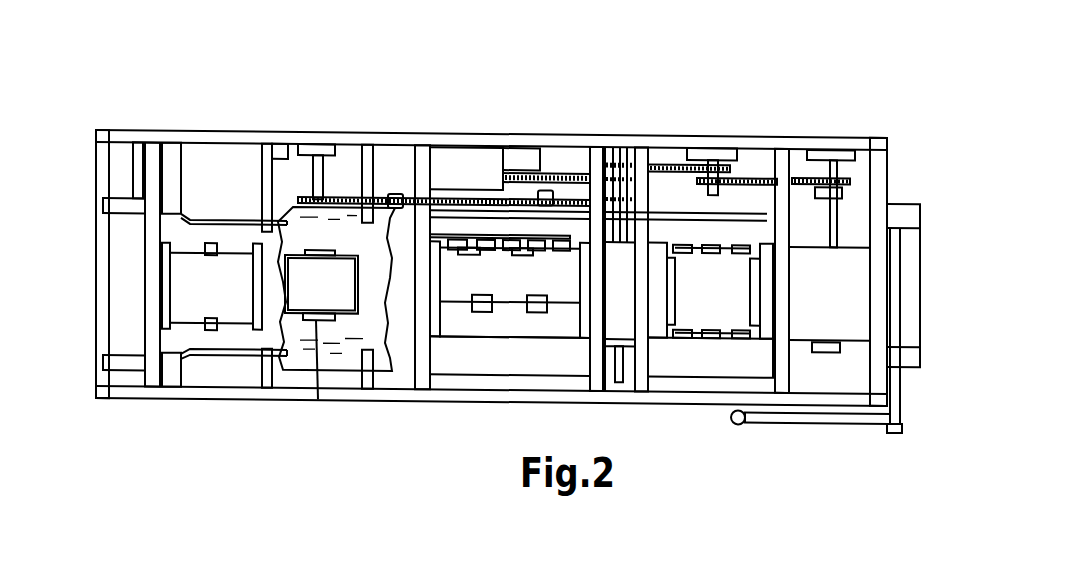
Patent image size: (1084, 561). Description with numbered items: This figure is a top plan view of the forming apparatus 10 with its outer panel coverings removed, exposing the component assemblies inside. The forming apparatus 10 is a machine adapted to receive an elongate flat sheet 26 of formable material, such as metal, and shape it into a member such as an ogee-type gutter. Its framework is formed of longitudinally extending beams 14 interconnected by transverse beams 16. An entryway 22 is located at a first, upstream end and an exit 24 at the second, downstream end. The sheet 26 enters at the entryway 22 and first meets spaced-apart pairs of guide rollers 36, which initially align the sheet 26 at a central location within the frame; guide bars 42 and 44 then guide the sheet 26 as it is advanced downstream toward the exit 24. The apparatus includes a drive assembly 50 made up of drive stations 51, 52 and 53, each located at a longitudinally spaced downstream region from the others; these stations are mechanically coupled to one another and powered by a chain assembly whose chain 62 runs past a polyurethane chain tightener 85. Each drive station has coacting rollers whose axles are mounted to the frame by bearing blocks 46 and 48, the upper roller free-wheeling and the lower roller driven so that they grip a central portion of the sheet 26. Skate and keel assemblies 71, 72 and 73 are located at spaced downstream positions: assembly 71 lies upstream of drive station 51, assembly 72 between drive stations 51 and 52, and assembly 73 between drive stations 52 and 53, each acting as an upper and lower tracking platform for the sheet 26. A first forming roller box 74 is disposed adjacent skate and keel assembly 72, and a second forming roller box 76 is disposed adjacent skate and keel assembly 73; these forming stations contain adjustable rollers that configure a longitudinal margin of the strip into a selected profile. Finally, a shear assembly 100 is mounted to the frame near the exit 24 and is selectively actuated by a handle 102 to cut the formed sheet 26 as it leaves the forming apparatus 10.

The forming apparatus 10 is at (514, 82).
The longitudinally extending beams 14 is at (441, 399).
The transverse beams 16 is at (783, 362).
The entryway 22 is at (108, 268).
The exit 24 is at (903, 163).
The elongated sheet 26 is at (378, 358).
The guide rollers 36 is at (124, 200).
The guide bar 42 is at (208, 352).
The guide bar 44 is at (205, 212).
The bearing block 46 is at (309, 142).
The bearing block 48 is at (323, 252).
The drive assembly 50 is at (581, 158).
The drive station 51 is at (331, 296).
The drive station 52 is at (473, 152).
The drive station 53 is at (839, 310).
The chain 62 is at (334, 196).
The skate and keel assembly 71 is at (221, 296).
The skate and keel assembly 72 is at (509, 291).
The skate and keel assembly 73 is at (719, 303).
The forming roller box 74 is at (498, 373).
The forming roller box 76 is at (698, 378).
The chain tightener 85 is at (396, 192).
The shear assembly 100 is at (913, 332).
The handle 102 is at (830, 424).